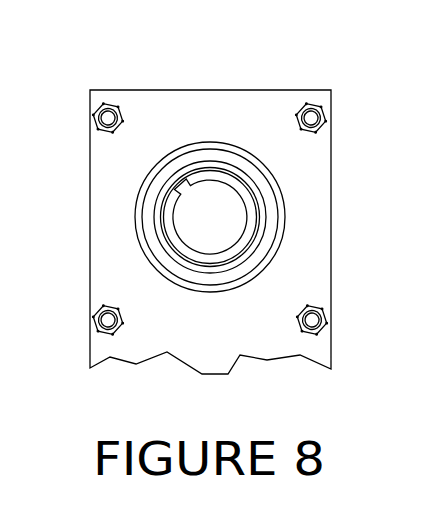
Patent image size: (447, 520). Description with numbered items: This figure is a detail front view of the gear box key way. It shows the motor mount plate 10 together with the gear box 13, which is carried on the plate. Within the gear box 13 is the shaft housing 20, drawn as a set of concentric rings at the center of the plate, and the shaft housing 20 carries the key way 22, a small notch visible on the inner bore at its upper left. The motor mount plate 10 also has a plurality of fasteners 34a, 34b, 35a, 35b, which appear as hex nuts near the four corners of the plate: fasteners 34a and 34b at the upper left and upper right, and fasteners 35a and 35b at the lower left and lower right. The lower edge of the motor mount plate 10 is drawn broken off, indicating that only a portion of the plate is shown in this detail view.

The motor mount plate 10 is at (178, 105).
The gear box 13 is at (148, 252).
The shaft housing 20 is at (243, 196).
The key way 22 is at (178, 190).
The fastener 34a is at (103, 106).
The fastener 34b is at (317, 106).
The fastener 35a is at (104, 308).
The fastener 35b is at (316, 308).